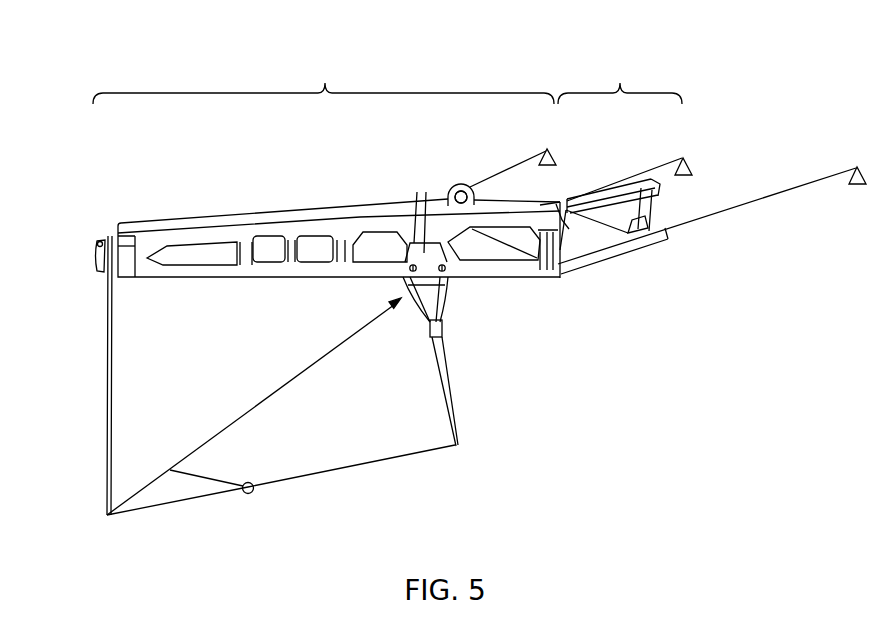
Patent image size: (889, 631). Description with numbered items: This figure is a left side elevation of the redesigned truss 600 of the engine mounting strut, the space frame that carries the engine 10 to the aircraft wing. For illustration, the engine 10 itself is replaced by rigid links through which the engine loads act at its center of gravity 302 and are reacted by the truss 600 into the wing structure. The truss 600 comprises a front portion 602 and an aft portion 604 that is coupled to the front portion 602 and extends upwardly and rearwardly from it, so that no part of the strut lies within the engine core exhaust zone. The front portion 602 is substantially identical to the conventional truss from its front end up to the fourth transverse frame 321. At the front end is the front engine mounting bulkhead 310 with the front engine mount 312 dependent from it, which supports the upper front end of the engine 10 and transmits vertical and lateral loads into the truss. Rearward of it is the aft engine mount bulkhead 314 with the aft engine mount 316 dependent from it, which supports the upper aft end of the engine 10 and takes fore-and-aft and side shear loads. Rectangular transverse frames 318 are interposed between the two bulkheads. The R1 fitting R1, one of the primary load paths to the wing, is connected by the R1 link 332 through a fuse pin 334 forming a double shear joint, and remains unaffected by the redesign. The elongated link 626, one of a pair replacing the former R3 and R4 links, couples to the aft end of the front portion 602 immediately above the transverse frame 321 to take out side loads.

The truss 600 is at (387, 65).
The front portion 602 is at (323, 80).
The aft portion 604 is at (620, 80).
The engine 10 is at (475, 397).
The center of gravity 302 is at (248, 494).
The front engine mounting bulkhead 310 is at (102, 250).
The front engine mount 312 is at (107, 283).
The aft engine mount bulkhead 314 is at (415, 243).
The aft engine mount 316 is at (443, 302).
The transverse frames 318 is at (343, 256).
The fourth transverse frame 321 is at (549, 263).
The R1 link 332 is at (505, 168).
The fuse pin 334 is at (451, 186).
The R1 fitting R1 is at (468, 194).
The elongated link 626 is at (617, 182).